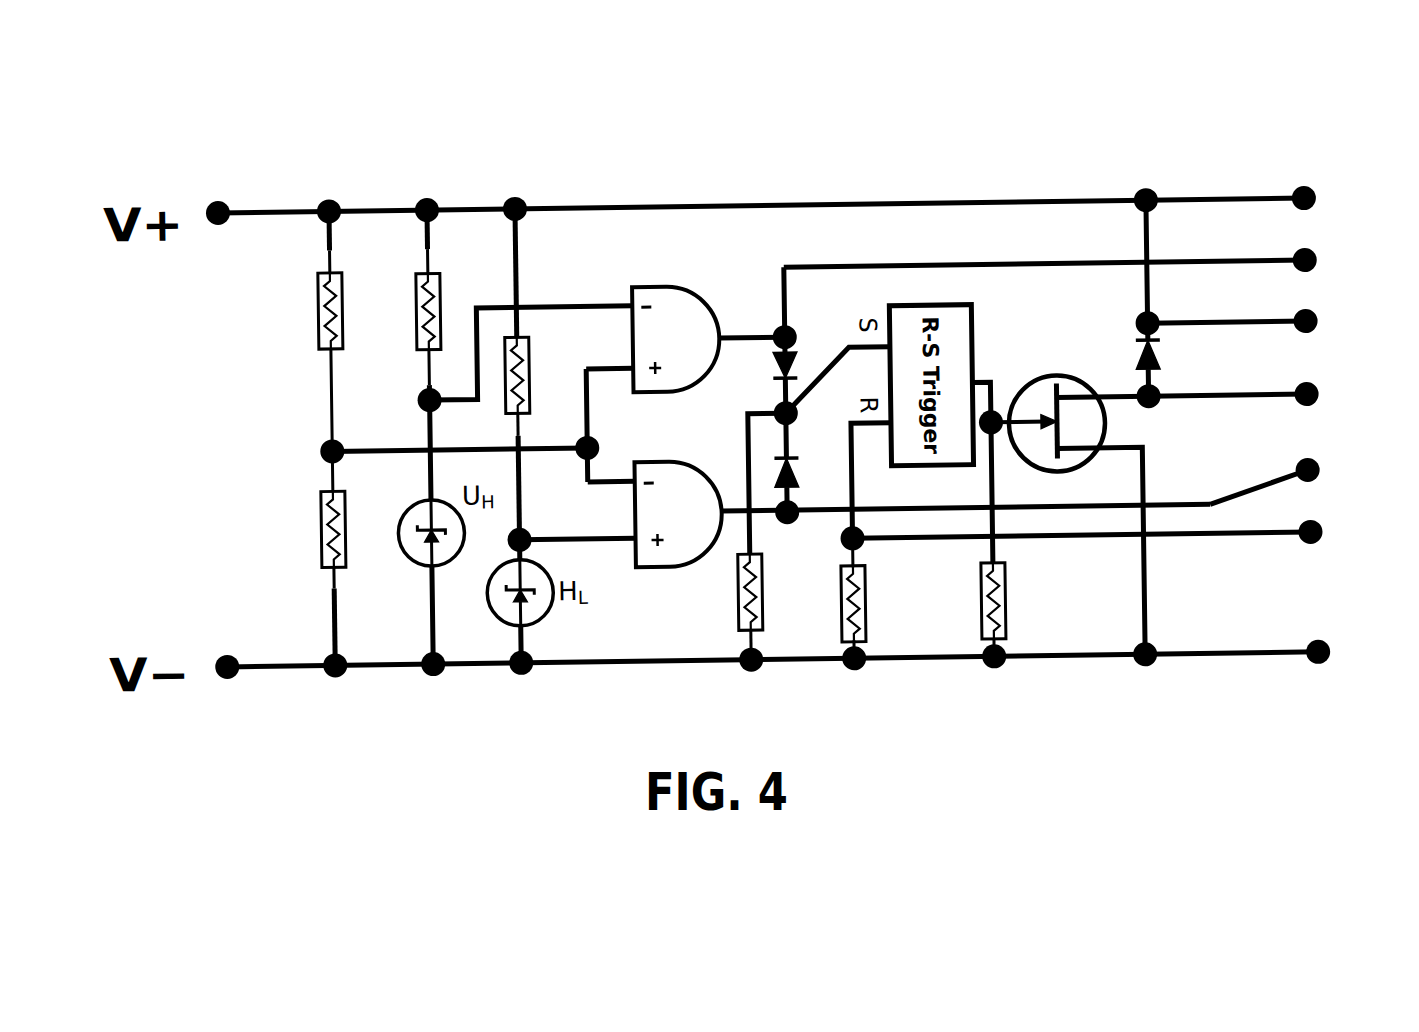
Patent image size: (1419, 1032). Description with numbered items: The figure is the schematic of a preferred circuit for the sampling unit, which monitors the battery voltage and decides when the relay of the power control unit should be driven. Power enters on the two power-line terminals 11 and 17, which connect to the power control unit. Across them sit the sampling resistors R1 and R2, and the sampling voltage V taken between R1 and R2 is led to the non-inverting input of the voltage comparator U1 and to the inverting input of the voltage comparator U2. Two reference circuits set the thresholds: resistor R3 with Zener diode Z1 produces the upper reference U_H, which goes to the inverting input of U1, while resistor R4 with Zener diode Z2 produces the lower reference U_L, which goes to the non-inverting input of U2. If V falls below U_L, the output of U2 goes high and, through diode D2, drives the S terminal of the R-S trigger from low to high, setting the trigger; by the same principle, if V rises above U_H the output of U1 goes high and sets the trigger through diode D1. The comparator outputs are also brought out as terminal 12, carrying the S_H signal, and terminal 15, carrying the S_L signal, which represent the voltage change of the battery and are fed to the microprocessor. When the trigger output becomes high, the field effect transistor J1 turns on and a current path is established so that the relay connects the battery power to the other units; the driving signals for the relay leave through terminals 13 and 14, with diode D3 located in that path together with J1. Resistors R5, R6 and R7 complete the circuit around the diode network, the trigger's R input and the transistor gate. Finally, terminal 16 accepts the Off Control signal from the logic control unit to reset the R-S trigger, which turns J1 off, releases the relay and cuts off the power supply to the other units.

The terminal 11 is at (1275, 193).
The terminal 12 is at (1072, 261).
The terminal 13 is at (1254, 321).
The terminal 14 is at (1255, 386).
The terminal 15 is at (1287, 480).
The terminal 16 is at (1109, 538).
The terminal 17 is at (1282, 654).
The sampling resistor R1 is at (311, 331).
The sampling resistor R2 is at (314, 558).
The resistor R3 is at (410, 305).
The resistor R4 is at (537, 374).
The resistor R5 is at (730, 607).
The resistor R6 is at (875, 598).
The resistor R7 is at (1015, 609).
The Zener diode Z1 is at (424, 532).
The Zener diode Z2 is at (509, 601).
The voltage comparator U1 is at (686, 383).
The voltage comparator U2 is at (922, 510).
The diode D1 is at (766, 340).
The diode D2 is at (806, 462).
The diode D3 is at (1168, 297).
The field effect transistor J1 is at (1076, 515).